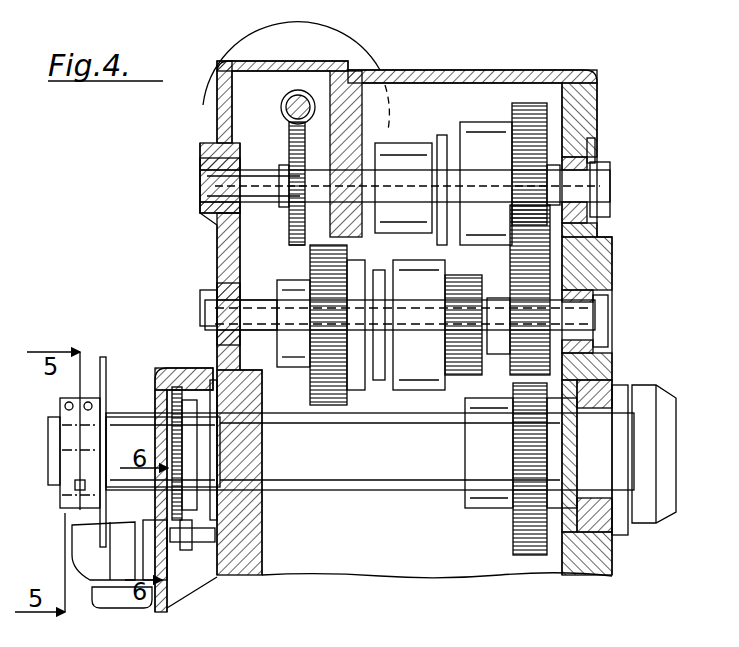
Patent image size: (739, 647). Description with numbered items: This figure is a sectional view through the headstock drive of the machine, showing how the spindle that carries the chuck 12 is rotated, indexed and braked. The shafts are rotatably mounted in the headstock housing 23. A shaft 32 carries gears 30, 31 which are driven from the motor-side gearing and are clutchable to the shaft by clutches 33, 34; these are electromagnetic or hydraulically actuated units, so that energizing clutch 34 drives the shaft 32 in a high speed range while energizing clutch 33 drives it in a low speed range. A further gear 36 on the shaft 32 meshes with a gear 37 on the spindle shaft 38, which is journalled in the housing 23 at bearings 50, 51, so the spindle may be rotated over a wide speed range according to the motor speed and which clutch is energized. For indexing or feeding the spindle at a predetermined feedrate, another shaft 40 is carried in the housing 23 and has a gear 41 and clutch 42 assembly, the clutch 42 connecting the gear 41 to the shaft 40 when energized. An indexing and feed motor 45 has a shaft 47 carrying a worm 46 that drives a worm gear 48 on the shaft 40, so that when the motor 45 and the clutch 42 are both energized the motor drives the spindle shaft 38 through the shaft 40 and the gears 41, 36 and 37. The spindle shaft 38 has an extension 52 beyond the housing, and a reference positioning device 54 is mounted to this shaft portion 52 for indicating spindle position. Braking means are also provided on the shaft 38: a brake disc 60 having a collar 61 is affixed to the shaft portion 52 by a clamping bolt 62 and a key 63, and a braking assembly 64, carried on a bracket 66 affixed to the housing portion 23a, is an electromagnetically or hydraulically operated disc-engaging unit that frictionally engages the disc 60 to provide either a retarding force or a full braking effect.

The chuck 12 is at (661, 400).
The headstock housing 23 is at (588, 116).
The housing portion 23a is at (190, 370).
The gear 30 is at (331, 400).
The gear 31 is at (462, 380).
The shaft 32 is at (257, 318).
The clutch 33 is at (358, 397).
The clutch 34 is at (421, 393).
The gear 36 is at (542, 288).
The gear 37 is at (527, 480).
The spindle shaft 38 is at (362, 478).
The shaft 40 is at (223, 186).
The gear 41 is at (528, 122).
The clutch 42 is at (472, 125).
The indexing and feed motor 45 is at (366, 17).
The worm 46 is at (282, 104).
The shaft 47 is at (298, 94).
The worm gear 48 is at (289, 137).
The bearing 50 is at (620, 385).
The bearing 51 is at (240, 506).
The extension 52 is at (125, 430).
The reference positioning device 54 is at (192, 548).
The brake disc 60 is at (105, 370).
The collar 61 is at (66, 452).
The clamping bolt 62 is at (66, 408).
The key 63 is at (70, 486).
The braking assembly 64 is at (75, 540).
The bracket 66 is at (113, 604).